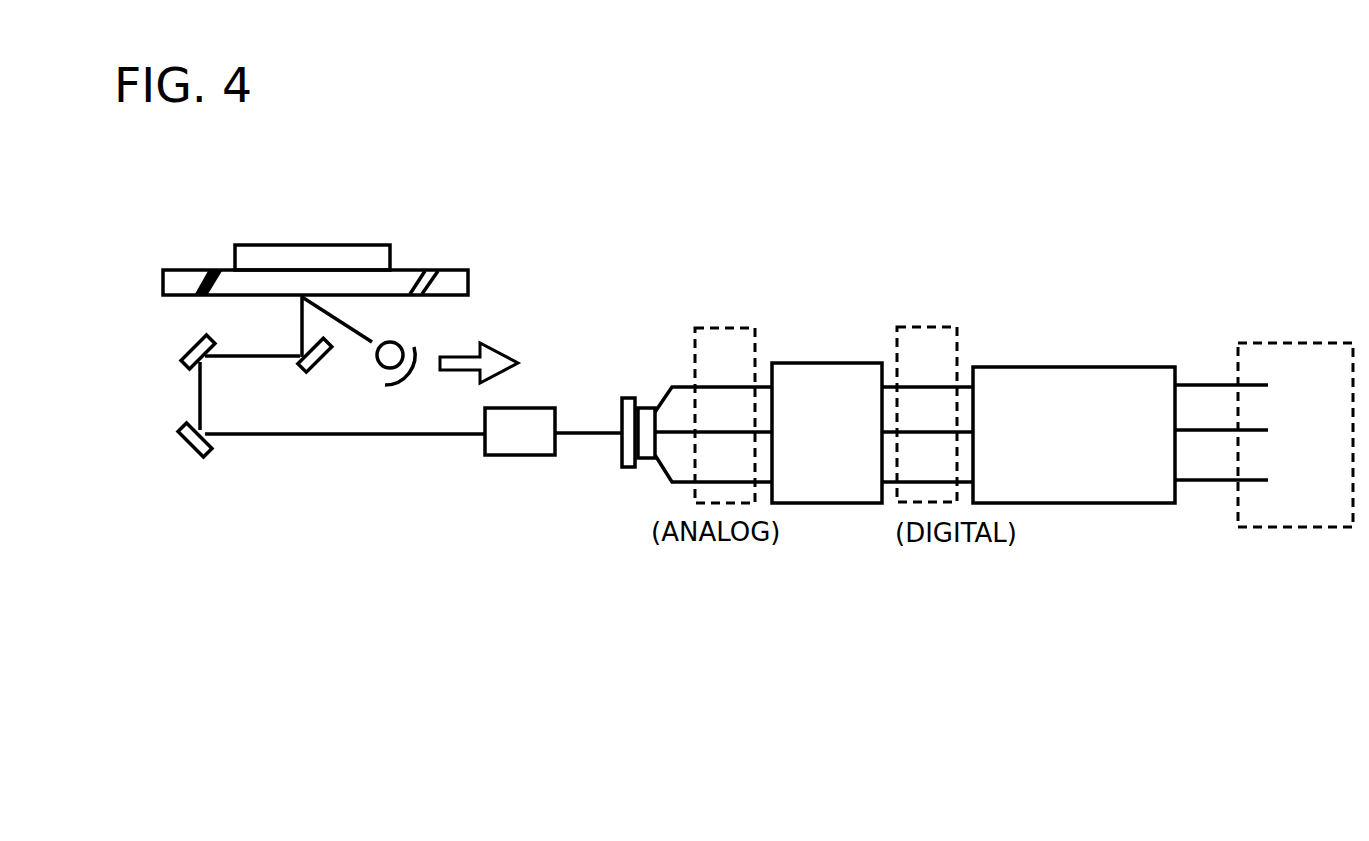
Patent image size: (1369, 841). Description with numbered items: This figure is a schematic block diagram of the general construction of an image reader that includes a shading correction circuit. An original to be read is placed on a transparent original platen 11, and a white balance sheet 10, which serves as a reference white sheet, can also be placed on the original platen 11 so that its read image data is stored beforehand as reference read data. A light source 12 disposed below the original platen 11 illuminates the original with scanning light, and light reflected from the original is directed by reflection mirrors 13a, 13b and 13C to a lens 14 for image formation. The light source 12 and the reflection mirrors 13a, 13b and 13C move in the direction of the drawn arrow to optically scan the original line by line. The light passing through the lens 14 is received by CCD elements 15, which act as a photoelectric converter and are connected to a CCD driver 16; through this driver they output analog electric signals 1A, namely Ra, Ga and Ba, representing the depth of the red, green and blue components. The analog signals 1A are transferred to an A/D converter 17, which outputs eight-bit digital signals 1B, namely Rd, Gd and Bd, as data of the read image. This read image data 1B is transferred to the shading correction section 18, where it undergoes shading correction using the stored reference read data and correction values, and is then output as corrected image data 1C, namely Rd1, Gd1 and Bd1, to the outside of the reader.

The white balance sheet 10 is at (373, 242).
The original platen 11 is at (458, 268).
The light source 12 is at (415, 345).
The reflection mirror 13a is at (317, 375).
The reflection mirror 13b is at (182, 350).
The reflection mirror 13C is at (185, 448).
The lens 14 is at (508, 455).
The CCD elements 15 is at (623, 467).
The CCD driver 16 is at (645, 407).
The A/D converter 17 is at (833, 510).
The shading correction section 18 is at (1112, 510).
The analog electric signals 1A is at (718, 327).
The digital signals 1B is at (918, 327).
The corrected image data 1C is at (1282, 337).